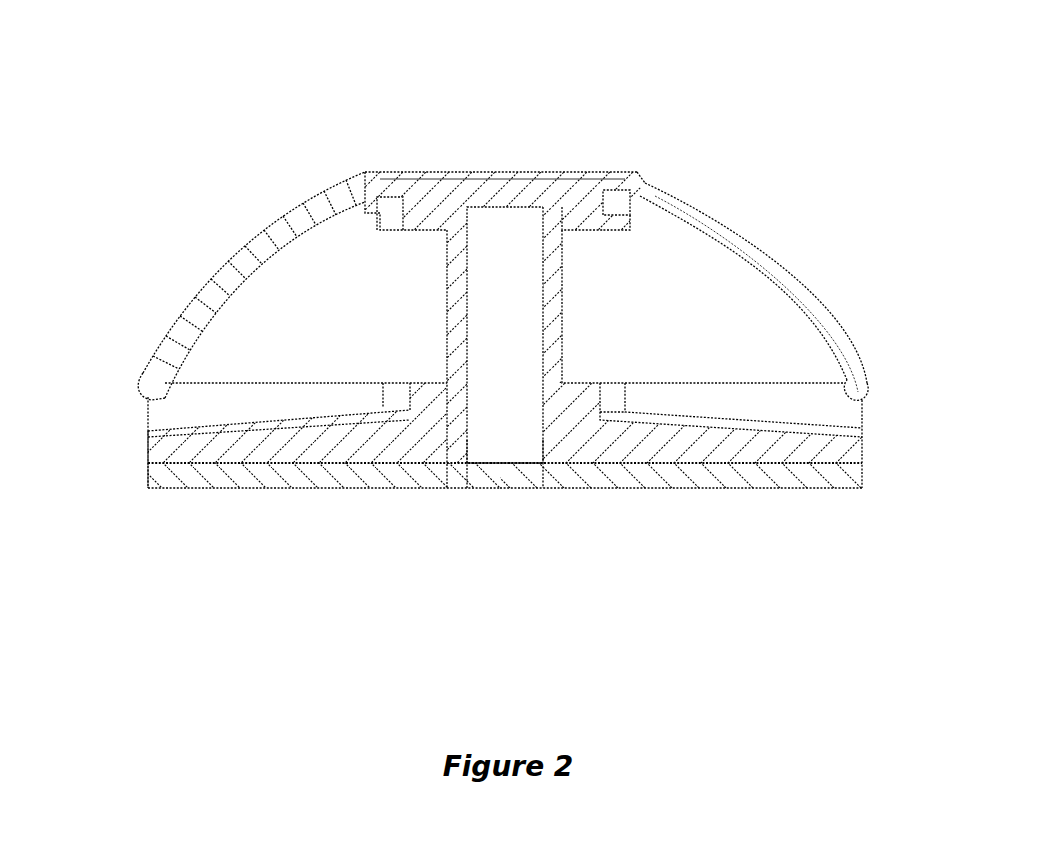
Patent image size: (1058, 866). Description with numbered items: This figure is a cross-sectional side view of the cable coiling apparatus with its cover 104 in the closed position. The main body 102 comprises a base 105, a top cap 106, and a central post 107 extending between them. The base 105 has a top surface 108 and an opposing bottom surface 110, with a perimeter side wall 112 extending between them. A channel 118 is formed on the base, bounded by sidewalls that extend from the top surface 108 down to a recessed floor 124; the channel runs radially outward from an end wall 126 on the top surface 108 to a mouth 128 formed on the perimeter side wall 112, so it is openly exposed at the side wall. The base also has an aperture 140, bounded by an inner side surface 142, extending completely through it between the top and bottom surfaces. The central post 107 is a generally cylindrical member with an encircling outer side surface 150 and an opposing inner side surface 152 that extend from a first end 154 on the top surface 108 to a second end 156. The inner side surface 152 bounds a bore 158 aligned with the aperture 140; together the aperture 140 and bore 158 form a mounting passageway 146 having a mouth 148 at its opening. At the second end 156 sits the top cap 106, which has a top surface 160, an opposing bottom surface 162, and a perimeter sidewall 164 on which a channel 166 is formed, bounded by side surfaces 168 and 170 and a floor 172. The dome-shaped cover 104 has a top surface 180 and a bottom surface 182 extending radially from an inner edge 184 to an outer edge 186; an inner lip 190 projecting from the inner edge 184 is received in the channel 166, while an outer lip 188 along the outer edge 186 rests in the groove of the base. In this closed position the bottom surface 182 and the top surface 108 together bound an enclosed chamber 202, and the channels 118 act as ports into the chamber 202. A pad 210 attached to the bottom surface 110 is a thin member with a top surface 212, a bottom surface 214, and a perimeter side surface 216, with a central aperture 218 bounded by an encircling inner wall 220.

The main body 102 is at (860, 415).
The cover 104 is at (778, 262).
The base 105 is at (862, 447).
The top cap 106 is at (558, 203).
The central post 107 is at (465, 355).
The top surface 108 is at (213, 378).
The bottom surface 110 is at (785, 462).
The perimeter side wall 112 is at (147, 453).
The channel 118 is at (148, 420).
The floor 124 is at (207, 432).
The end wall 126 is at (398, 405).
The mouth 128 is at (147, 405).
The aperture 140 is at (478, 445).
The inner side surface 142 is at (545, 432).
The mounting passageway 146 is at (374, 510).
The mouth 148 is at (512, 452).
The outer side surface 150 is at (562, 303).
The inner side surface 152 is at (542, 305).
The first end 154 is at (430, 370).
The second end 156 is at (440, 267).
The bore 158 is at (500, 368).
The top surface 160 is at (447, 173).
The bottom surface 162 is at (402, 232).
The perimeter sidewall 164 is at (627, 185).
The channel 166 is at (627, 205).
The side surface 168 is at (633, 180).
The side surface 170 is at (615, 218).
The floor 172 is at (603, 203).
The top surface 180 is at (247, 247).
The bottom surface 182 is at (228, 306).
The inner edge 184 is at (304, 120).
The outer edge 186 is at (106, 324).
The outer lip 188 is at (866, 378).
The inner lip 190 is at (392, 207).
The chamber 202 is at (692, 353).
The pad 210 is at (863, 483).
The top surface 212 is at (343, 458).
The bottom surface 214 is at (155, 493).
The perimeter side surface 216 is at (148, 482).
The aperture 218 is at (512, 478).
The inner wall 220 is at (468, 479).